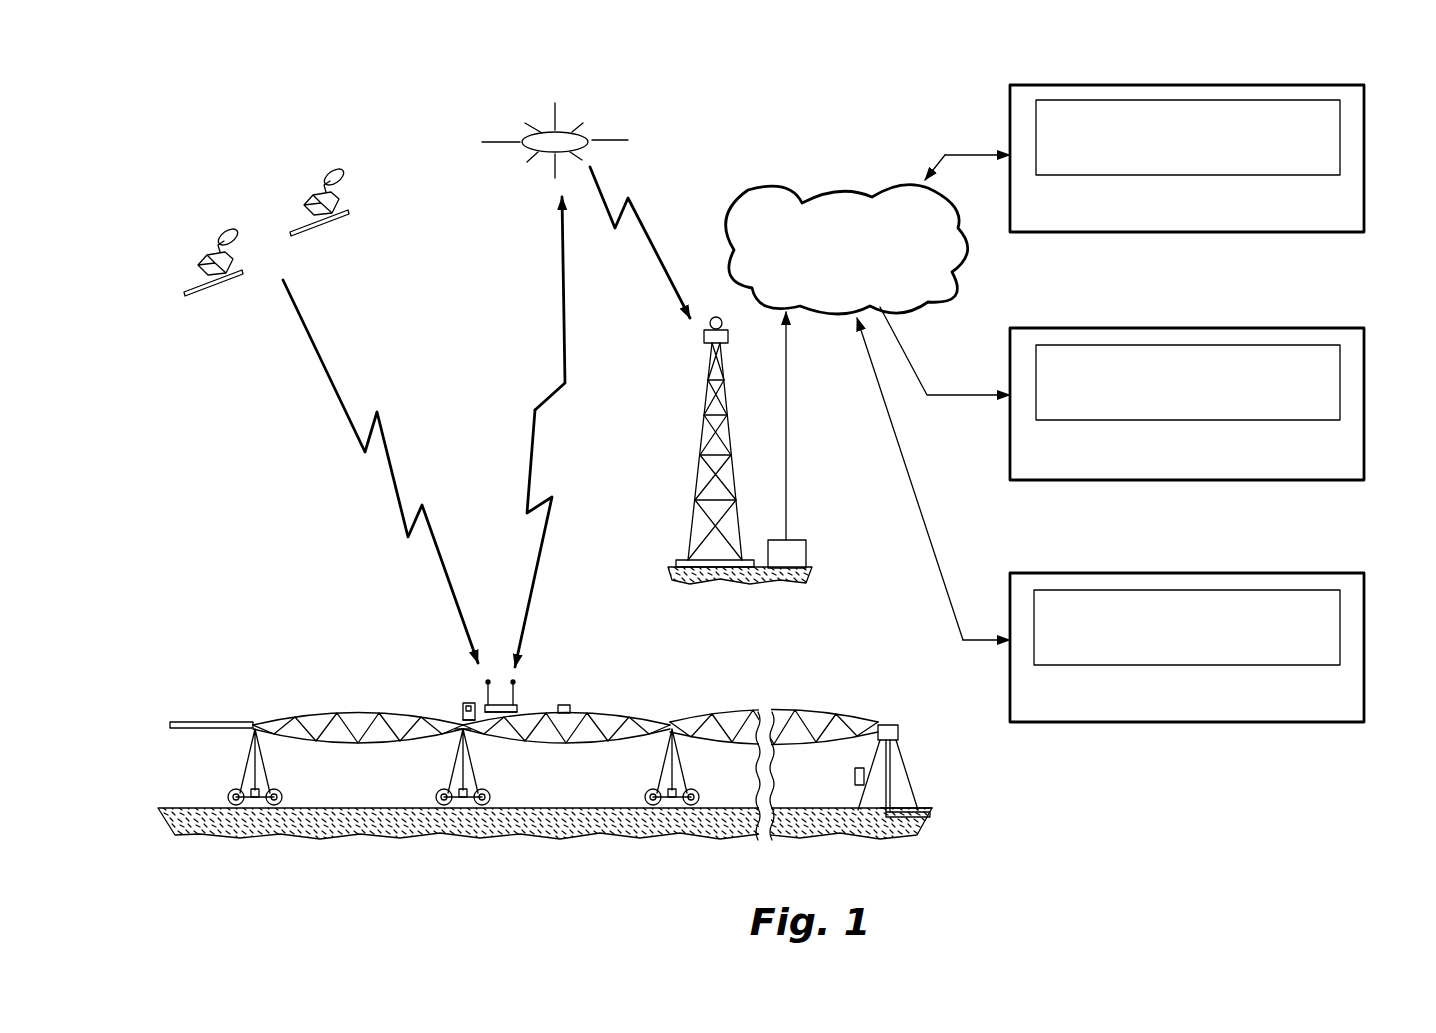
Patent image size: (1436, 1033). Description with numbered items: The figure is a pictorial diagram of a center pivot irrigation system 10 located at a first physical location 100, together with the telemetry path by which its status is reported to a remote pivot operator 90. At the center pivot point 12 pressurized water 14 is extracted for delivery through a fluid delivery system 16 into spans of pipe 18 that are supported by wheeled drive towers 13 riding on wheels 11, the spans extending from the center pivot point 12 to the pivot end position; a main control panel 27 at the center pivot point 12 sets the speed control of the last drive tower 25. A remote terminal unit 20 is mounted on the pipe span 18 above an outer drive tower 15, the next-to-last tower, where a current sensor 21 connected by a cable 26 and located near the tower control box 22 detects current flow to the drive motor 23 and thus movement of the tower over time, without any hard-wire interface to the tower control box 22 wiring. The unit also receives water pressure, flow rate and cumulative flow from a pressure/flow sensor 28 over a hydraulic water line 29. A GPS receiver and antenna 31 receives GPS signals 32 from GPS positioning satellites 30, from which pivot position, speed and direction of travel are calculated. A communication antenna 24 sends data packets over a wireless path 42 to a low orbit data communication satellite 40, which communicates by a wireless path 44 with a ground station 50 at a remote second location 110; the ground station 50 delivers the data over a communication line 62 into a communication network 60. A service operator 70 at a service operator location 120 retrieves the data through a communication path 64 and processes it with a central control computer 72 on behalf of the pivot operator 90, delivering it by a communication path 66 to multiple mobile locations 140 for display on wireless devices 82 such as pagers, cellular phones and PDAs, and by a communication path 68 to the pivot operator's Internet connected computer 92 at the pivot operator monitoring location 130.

The center pivot irrigation system 10 is at (560, 725).
The wheels 11 is at (483, 815).
The center pivot point 12 is at (889, 784).
The wheeled drive towers 13 is at (456, 815).
The pressurized water 14 is at (920, 830).
The outer drive tower 15 is at (462, 732).
The fluid delivery system 16 is at (888, 788).
The spans of pipe 18 is at (565, 703).
The remote terminal unit 20 is at (188, 720).
The current sensor 21 is at (470, 705).
The tower control box 22 is at (462, 707).
The drive motor 23 is at (460, 810).
The communication antenna 24 is at (511, 690).
The last drive tower 25 is at (460, 743).
The cable 26 is at (477, 737).
The main control panel 27 is at (853, 777).
The pressure/flow sensor 28 is at (570, 706).
The hydraulic water line 29 is at (525, 712).
The GPS positioning satellites 30 is at (205, 253).
The GPS receiver and antenna 31 is at (487, 682).
The GPS signals 32 is at (355, 433).
The low orbit data communication satellite 40 is at (547, 130).
The wireless path 42 is at (533, 382).
The wireless path 44 is at (643, 222).
The ground station 50 is at (709, 450).
The communication network 60 is at (838, 187).
The communication line 62 is at (787, 403).
The communication path 64 is at (967, 155).
The communication path 66 is at (928, 345).
The communication path 68 is at (913, 492).
The service operator 70 is at (1220, 187).
The central control computer 72 is at (1343, 127).
The wireless devices 82 is at (1153, 377).
The pivot operator 90 is at (1187, 656).
The Internet connected computer 92 is at (1085, 590).
The first physical location 100 is at (928, 807).
The remote second location 110 is at (687, 560).
The service operator location 120 is at (1273, 222).
The pivot operator monitoring location 130 is at (1275, 713).
The mobile locations 140 is at (1063, 458).